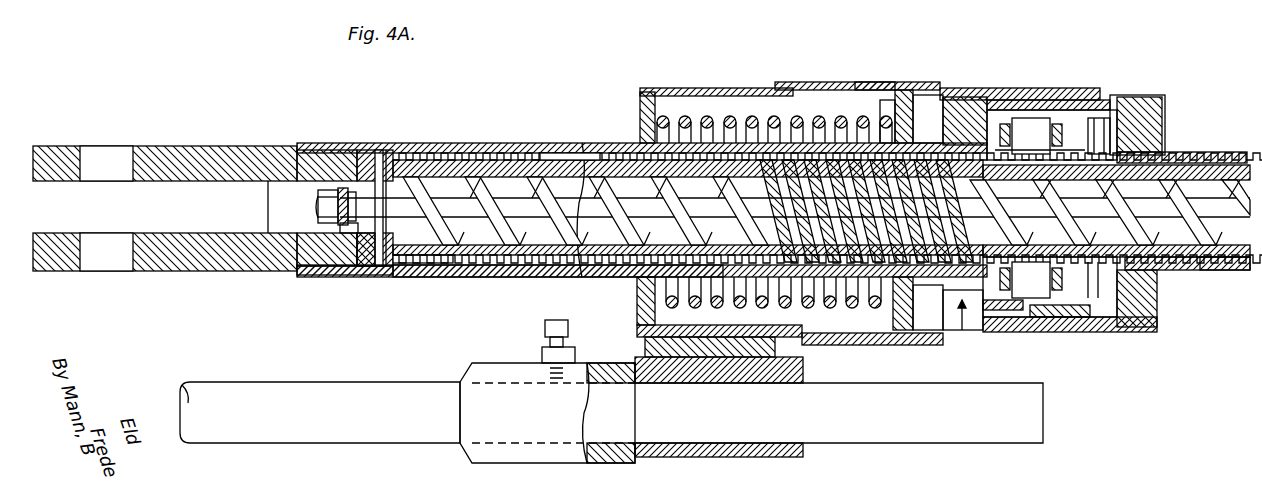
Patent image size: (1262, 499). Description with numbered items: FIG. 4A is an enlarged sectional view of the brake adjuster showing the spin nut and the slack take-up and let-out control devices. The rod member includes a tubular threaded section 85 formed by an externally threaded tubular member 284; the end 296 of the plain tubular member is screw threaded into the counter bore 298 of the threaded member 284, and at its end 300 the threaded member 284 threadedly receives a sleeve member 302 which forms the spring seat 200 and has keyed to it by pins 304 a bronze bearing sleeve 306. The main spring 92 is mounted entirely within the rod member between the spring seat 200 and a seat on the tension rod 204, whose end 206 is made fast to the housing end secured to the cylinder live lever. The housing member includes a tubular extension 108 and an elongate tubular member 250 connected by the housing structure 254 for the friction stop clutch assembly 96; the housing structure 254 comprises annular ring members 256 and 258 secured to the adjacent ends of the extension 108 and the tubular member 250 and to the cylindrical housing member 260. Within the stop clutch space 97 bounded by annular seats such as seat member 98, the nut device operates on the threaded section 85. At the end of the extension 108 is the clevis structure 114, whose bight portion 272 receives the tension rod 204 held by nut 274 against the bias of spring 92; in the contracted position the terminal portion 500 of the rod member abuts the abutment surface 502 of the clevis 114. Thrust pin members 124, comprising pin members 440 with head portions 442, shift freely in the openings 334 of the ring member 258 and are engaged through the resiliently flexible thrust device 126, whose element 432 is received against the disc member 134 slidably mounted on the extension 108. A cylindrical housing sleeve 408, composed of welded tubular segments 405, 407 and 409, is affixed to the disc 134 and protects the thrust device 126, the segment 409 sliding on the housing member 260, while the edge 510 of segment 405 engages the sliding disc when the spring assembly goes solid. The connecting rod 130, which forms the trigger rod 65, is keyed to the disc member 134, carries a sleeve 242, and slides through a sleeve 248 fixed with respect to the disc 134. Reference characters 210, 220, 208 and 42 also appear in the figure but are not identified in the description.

The outer tube 210 is at (193, 146).
The clevis structure 114 is at (243, 143).
The tube end portion 220 is at (325, 165).
The nut 274 is at (320, 212).
The terminal portion 500 is at (345, 180).
The abutment surface 502 is at (352, 182).
The sleeve end 208 is at (362, 150).
The pins 304 is at (380, 150).
The sleeve member 302 is at (388, 152).
The bronze bearing sleeve 306 is at (372, 266).
The end of tension rod 206 is at (330, 275).
The bight portion 272 is at (348, 233).
The end of threaded member 300 is at (425, 263).
The spring seat 200 is at (432, 143).
The tension rod 204 is at (515, 277).
The tubular extension 108 is at (605, 143).
The tubular threaded section 85 is at (487, 160).
The externally threaded tubular member 284 is at (548, 156).
The main spring 92 is at (490, 243).
The cylindrical housing sleeve 408 is at (688, 88).
The tubular segment 405 is at (780, 82).
The tubular segment 407 is at (875, 82).
The resiliently flexible thrust device 126 is at (742, 84).
The thrust spring element 432 is at (870, 135).
The annular ring member 258 is at (965, 100).
The tubular segment 409 is at (985, 90).
The friction stop clutch assembly 96 is at (1072, 86).
The annular stop or seat member 98 is at (1022, 118).
The stop clutch space 97 is at (1100, 118).
The annular ring member 256 is at (1150, 97).
The housing structure 254 is at (1165, 115).
The elongate tubular member 250 is at (1205, 152).
The disc member 134 is at (637, 300).
The edge of segment 510 is at (835, 345).
The lower spring 42 is at (885, 345).
The openings 334 is at (960, 332).
The thrust pin members 124 is at (998, 318).
The pin members 440 is at (990, 310).
The head portions 442 is at (1045, 318).
The cylindrical housing member 260 is at (1128, 332).
The counter bore 298 is at (1175, 272).
The end of tubular member 296 is at (1225, 270).
The connecting rod 130 is at (290, 430).
The trigger rod 65 is at (232, 452).
The sleeve 242 is at (545, 456).
The sleeve 248 is at (730, 457).